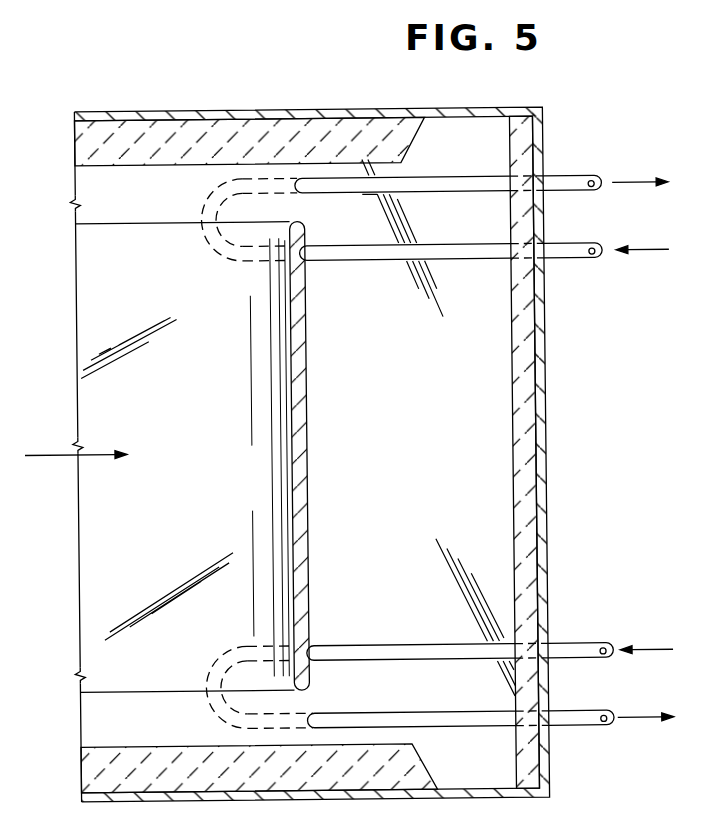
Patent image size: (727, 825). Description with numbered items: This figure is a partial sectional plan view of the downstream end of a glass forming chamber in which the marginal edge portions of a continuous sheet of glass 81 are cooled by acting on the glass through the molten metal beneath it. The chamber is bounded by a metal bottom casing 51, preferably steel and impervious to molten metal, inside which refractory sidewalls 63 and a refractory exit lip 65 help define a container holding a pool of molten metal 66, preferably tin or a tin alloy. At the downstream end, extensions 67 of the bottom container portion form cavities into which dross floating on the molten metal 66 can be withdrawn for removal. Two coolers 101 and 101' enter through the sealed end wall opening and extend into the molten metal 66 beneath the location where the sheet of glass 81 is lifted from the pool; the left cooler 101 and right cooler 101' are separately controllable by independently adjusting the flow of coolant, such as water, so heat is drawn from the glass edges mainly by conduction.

The bottom casing 51 is at (78, 116).
The refractory sidewalls 63 is at (84, 148).
The refractory exit lip 65 is at (527, 413).
The pool of molten metal 66 is at (394, 419).
The extensions of the bottom container portion 67 is at (476, 154).
The continuous sheet of glass 81 is at (188, 510).
The left cooler 101 is at (435, 201).
The right cooler 101' is at (440, 667).